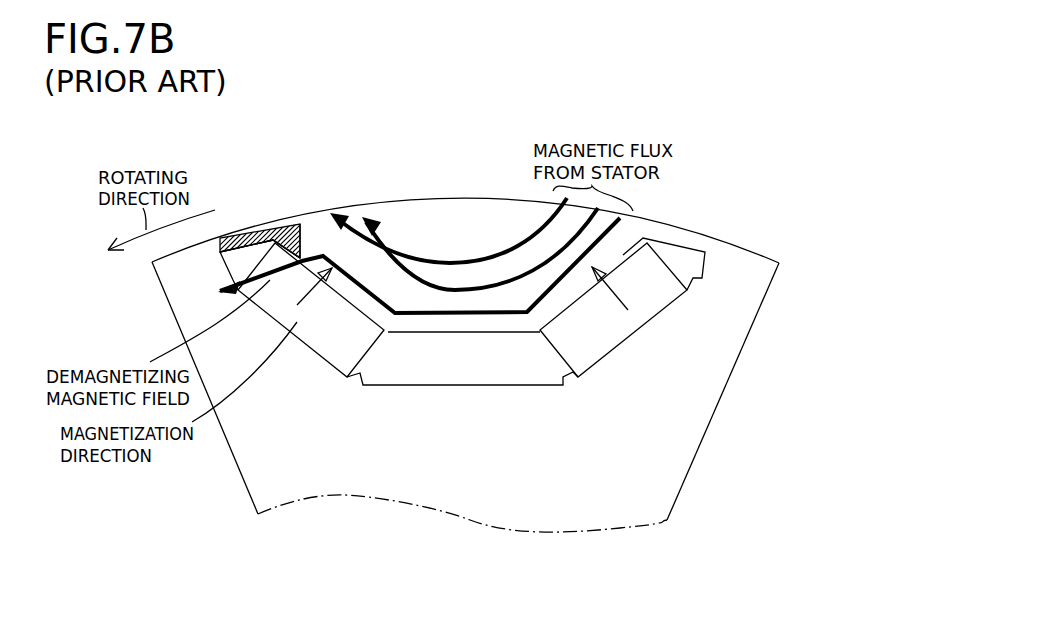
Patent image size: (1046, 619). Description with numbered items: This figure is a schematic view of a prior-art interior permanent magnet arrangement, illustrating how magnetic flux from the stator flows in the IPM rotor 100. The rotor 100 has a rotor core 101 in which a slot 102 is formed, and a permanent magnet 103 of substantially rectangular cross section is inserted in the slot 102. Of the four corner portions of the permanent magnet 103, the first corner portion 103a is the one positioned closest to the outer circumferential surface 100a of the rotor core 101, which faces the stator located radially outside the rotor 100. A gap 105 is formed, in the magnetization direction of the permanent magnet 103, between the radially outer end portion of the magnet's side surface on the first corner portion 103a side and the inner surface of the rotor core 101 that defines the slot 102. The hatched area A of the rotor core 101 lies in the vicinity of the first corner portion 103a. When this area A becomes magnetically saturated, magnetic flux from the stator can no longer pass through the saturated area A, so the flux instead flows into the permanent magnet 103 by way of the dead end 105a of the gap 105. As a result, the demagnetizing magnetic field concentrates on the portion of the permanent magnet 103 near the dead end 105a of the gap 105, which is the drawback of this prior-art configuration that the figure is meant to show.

The IPM rotor 100 is at (477, 329).
The outer circumferential surface 100a is at (715, 180).
The rotor core 101 is at (658, 468).
The slot 102 is at (340, 360).
The permanent magnet 103 is at (330, 343).
The first corner portion 103a is at (283, 234).
The gap 105 is at (300, 250).
The dead end of the gap 105a is at (306, 256).
The area of the rotor core A is at (258, 236).